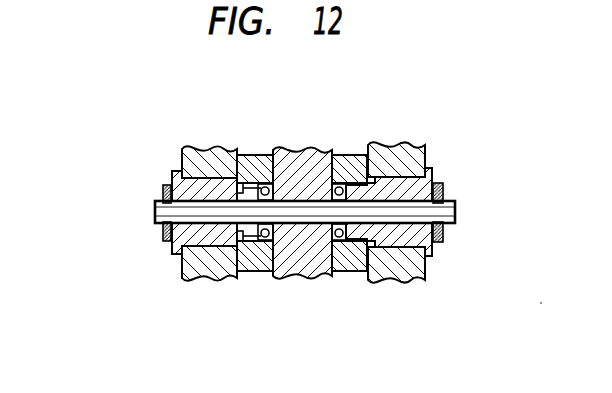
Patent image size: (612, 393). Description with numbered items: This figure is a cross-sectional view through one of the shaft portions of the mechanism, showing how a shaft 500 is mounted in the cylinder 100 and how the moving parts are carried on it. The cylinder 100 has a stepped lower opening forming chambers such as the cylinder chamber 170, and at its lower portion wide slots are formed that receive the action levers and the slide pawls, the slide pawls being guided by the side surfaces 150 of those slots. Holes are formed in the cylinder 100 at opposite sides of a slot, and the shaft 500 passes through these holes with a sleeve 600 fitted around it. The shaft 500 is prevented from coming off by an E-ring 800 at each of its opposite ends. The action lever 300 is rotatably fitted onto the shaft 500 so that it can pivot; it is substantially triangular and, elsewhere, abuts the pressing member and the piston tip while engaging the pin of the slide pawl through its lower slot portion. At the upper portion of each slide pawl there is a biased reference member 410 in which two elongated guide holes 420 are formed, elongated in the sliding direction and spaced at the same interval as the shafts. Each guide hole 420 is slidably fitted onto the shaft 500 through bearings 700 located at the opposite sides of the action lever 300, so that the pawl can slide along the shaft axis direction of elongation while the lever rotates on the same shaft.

The cylinder 100 is at (193, 153).
The side surfaces 150 is at (252, 155).
The cylinder chamber 170 is at (183, 275).
The action lever 300 is at (289, 273).
The biased reference member 410 is at (253, 272).
The guide hole 420 is at (345, 273).
The shaft 500 is at (163, 200).
The sleeve 600 is at (173, 251).
The bearing 700 is at (268, 187).
The E-ring 800 is at (163, 235).